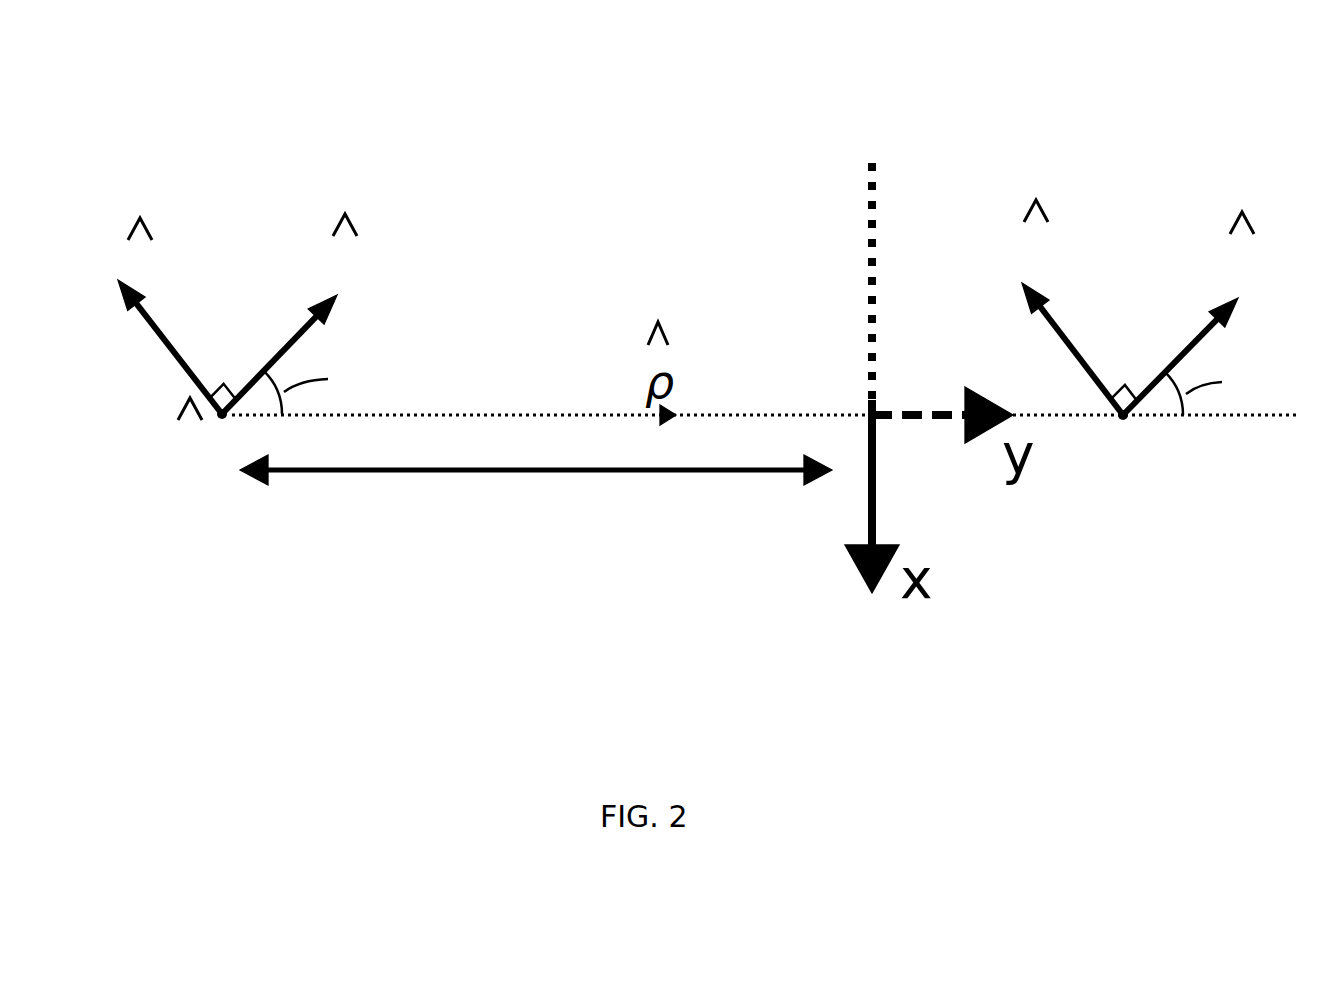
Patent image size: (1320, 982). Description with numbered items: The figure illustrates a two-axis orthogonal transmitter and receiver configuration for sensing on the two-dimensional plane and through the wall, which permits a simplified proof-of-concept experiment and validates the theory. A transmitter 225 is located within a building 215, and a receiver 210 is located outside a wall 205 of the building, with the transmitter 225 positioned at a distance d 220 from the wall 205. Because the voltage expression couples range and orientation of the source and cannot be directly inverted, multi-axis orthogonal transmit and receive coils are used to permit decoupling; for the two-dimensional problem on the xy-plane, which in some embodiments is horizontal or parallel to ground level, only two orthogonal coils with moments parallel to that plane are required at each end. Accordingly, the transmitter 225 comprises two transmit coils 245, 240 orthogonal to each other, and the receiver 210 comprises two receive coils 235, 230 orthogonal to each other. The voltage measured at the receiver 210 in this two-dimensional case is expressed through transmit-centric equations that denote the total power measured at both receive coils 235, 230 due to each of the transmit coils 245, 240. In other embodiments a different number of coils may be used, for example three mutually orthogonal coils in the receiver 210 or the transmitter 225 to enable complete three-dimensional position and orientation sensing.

The wall 205 is at (884, 143).
The receiver 210 is at (1142, 457).
The building 215 is at (572, 150).
The distance d 220 is at (532, 587).
The transmitter 225 is at (216, 471).
The receive coil 230 is at (1039, 345).
The receive coil 235 is at (1162, 338).
The transmit coil 240 is at (356, 322).
The transmit coil 245 is at (153, 374).